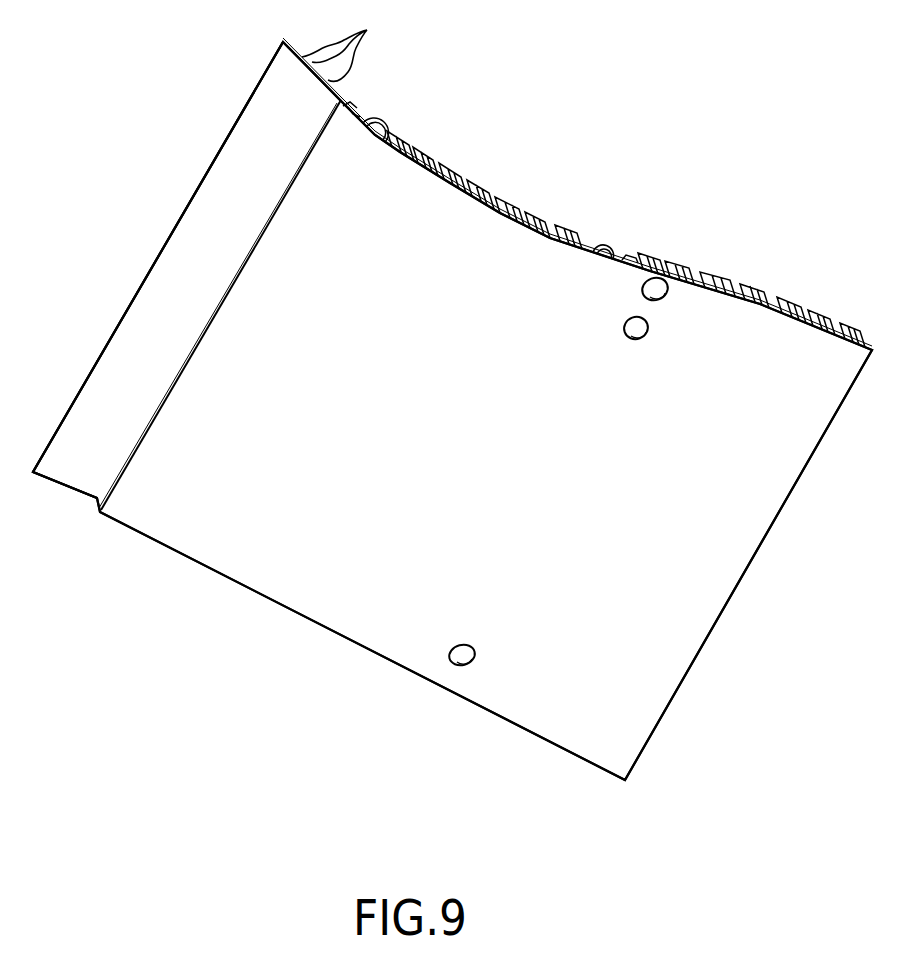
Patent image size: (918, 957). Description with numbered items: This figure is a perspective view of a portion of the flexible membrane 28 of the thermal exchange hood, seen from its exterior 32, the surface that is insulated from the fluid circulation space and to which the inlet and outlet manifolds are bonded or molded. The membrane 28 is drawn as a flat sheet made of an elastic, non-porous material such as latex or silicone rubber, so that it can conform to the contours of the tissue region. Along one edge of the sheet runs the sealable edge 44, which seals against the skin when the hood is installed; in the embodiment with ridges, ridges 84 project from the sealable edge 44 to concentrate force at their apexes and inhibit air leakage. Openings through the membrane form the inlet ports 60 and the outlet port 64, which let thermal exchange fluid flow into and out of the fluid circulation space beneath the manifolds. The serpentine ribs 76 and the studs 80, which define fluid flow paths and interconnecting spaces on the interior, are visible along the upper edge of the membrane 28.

The flexible membrane 28 is at (702, 650).
The exterior 32 is at (495, 506).
The sealable edge 44 is at (95, 512).
The inlet ports 60 is at (667, 297).
The outlet port 64 is at (470, 652).
The ribs 76 is at (557, 225).
The studs 80 is at (458, 181).
The ridges 84 is at (352, 50).